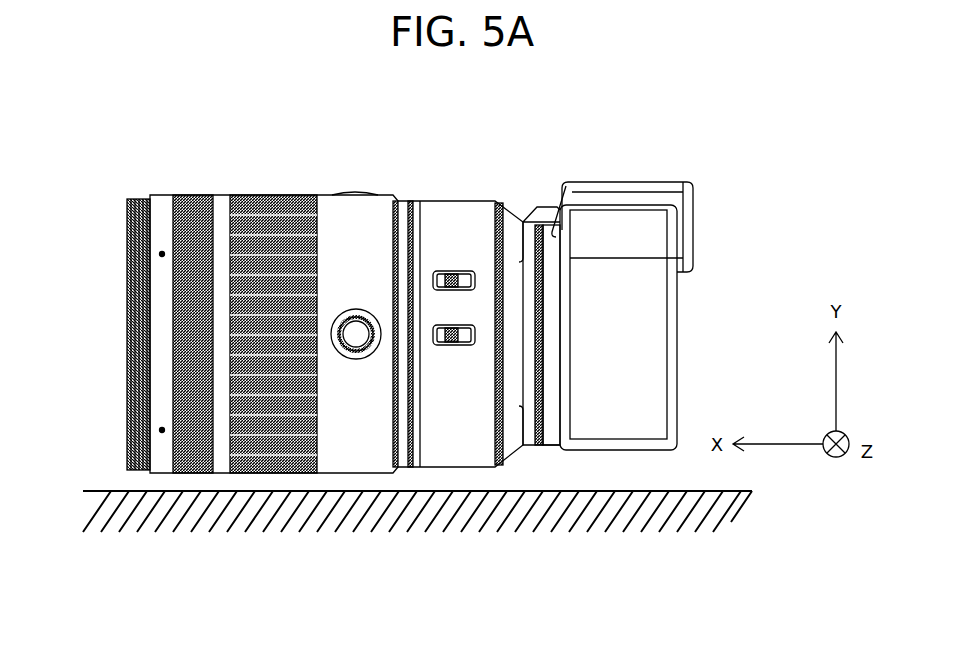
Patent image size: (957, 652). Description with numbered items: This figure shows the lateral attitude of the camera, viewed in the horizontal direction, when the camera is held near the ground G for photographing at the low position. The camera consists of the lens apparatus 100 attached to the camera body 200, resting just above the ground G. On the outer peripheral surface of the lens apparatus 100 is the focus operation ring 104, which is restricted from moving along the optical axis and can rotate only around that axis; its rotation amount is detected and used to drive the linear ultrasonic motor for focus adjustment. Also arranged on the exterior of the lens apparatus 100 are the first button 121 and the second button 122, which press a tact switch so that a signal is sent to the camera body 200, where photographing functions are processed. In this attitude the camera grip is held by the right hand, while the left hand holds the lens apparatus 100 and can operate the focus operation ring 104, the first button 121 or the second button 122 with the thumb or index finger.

The lens apparatus 100 is at (135, 197).
The focus operation ring 104 is at (257, 197).
The second button 122 is at (357, 192).
The first button 121 is at (356, 358).
The camera body 200 is at (667, 182).
The ground G is at (752, 497).